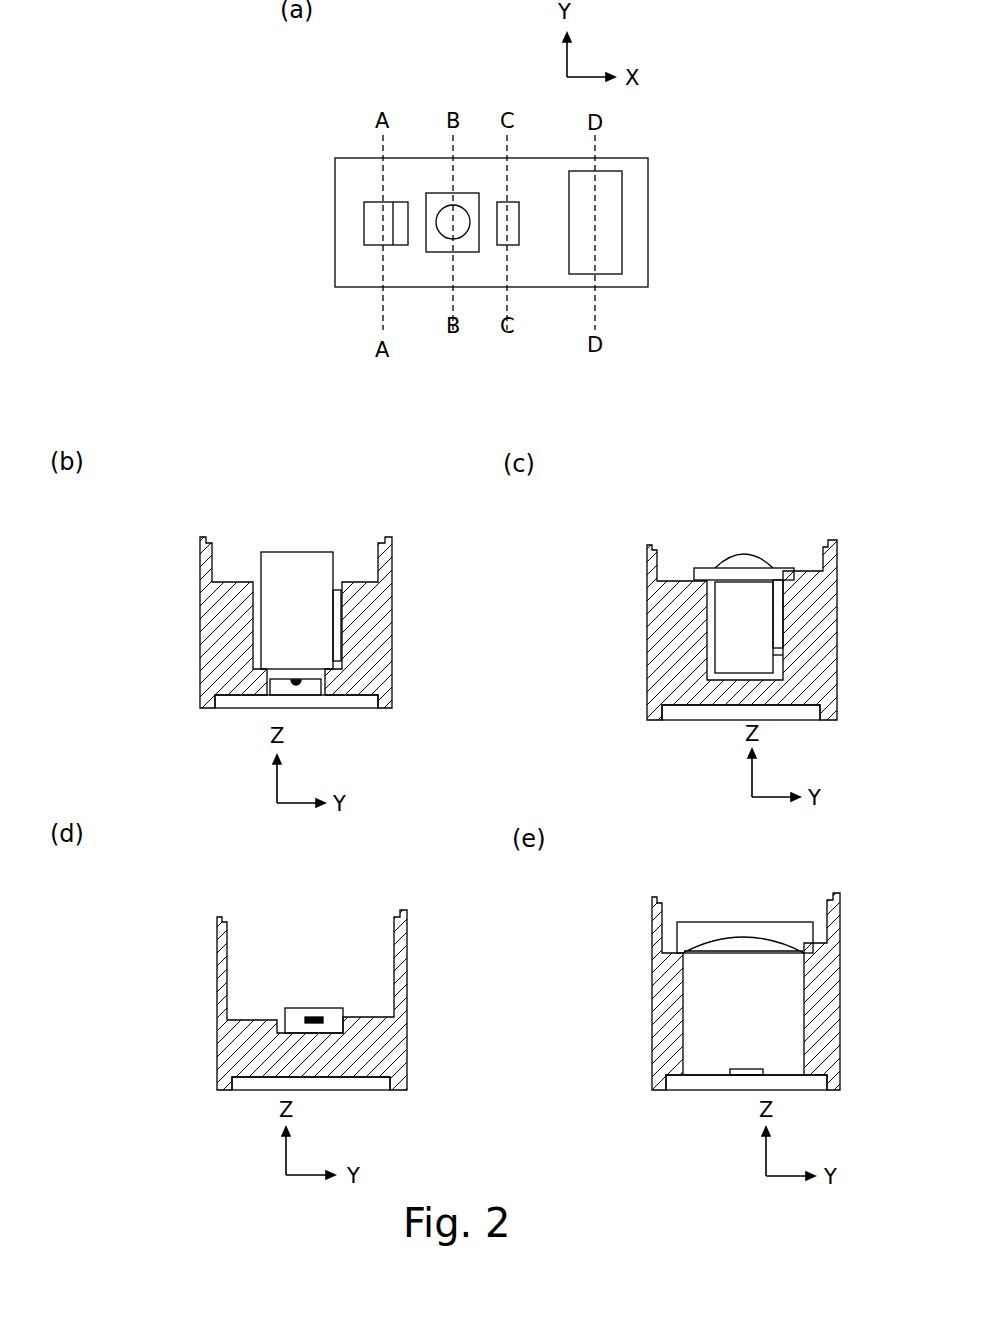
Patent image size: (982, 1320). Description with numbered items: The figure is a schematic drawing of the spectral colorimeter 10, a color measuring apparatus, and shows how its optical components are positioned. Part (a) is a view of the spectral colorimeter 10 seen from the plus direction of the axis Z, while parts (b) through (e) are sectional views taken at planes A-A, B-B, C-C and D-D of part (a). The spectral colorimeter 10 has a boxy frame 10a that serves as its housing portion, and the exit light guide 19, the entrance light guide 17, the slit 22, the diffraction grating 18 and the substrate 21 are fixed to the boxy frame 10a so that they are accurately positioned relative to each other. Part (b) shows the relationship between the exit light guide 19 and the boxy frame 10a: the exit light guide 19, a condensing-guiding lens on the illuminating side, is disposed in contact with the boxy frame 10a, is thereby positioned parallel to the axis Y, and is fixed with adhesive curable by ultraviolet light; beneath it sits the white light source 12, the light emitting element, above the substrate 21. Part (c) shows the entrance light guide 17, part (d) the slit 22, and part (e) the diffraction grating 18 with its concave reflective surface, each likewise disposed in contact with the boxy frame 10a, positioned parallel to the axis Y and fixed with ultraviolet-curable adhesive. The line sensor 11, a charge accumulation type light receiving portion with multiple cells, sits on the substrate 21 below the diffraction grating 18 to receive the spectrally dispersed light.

The spectral colorimeter 10 is at (487, 86).
The boxy frame 10a is at (348, 193).
The line sensor 11 is at (730, 1073).
The white light source 12 is at (277, 678).
The entrance light guide 17 is at (441, 243).
The diffraction grating 18 is at (580, 257).
The exit light guide 19 is at (372, 236).
The substrate 21 is at (240, 702).
The slit 22 is at (496, 237).